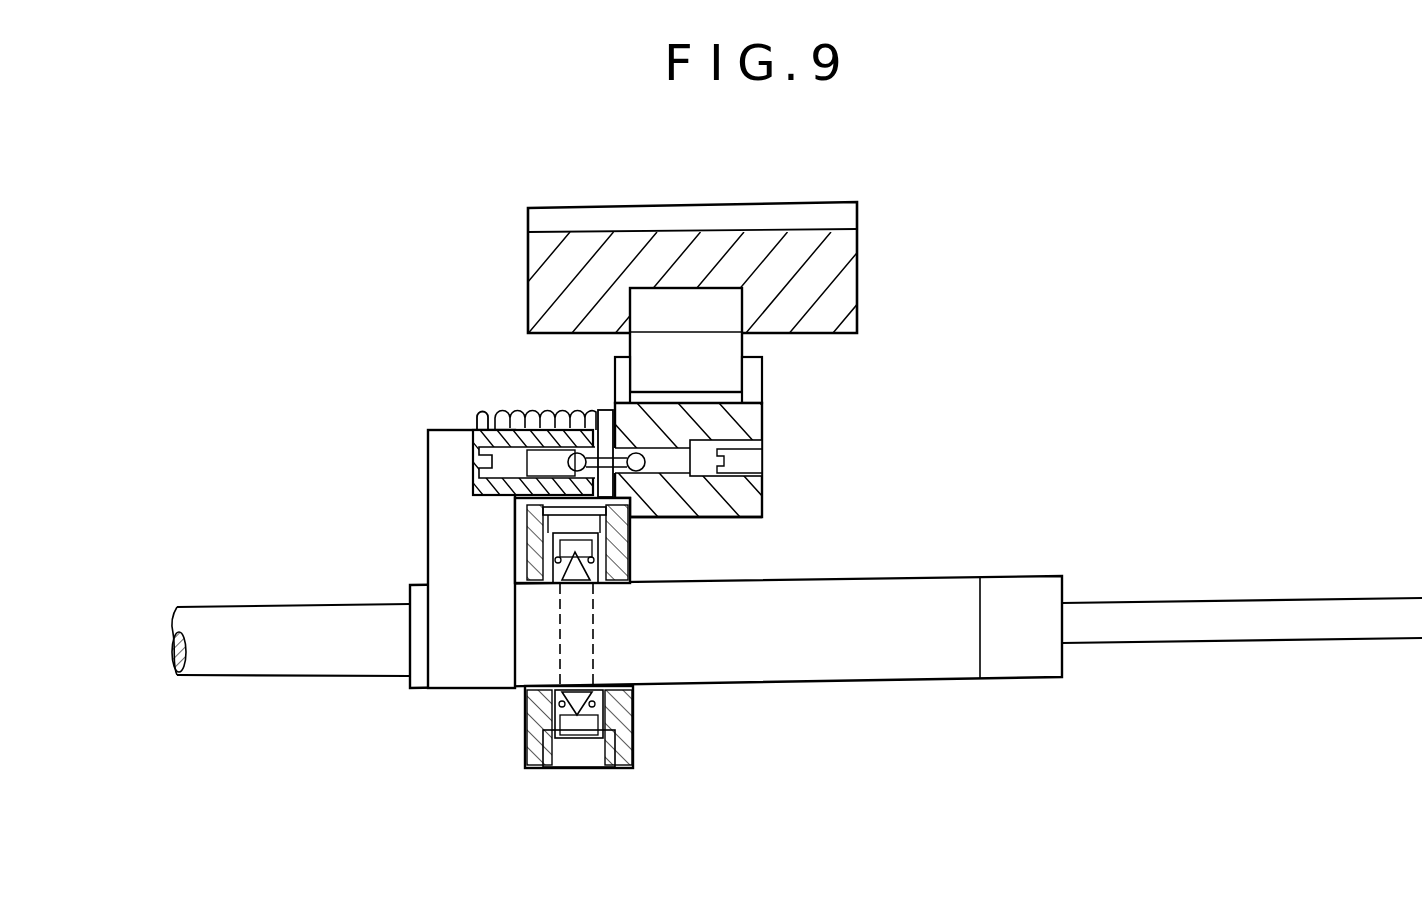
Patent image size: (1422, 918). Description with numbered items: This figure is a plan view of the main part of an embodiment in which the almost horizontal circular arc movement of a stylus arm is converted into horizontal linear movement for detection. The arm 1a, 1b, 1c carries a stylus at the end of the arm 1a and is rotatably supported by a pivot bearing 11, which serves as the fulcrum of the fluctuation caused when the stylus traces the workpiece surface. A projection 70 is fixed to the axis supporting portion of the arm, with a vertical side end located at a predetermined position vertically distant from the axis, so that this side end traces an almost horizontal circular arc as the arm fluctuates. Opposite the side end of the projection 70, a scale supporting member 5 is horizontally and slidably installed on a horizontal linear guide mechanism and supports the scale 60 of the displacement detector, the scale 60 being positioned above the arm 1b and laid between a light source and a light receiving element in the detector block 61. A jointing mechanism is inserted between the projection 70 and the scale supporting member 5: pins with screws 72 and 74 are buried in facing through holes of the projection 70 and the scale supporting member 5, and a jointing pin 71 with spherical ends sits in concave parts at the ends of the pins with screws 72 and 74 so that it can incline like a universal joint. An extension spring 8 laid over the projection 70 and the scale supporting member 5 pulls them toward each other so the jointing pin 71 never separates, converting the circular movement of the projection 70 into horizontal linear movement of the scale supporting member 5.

The arm 1a is at (307, 663).
The arm 1b is at (933, 665).
The arm 1c is at (1245, 630).
The scale supporting member 5 is at (752, 385).
The extension spring 8 is at (508, 428).
The pivot bearing 11 is at (632, 548).
The scale 60 is at (732, 312).
The detector block 61 is at (845, 282).
The projection 70 is at (440, 520).
The jointing pin 71 is at (606, 457).
The pin with screw 72 is at (492, 422).
The pin with screw 74 is at (707, 520).